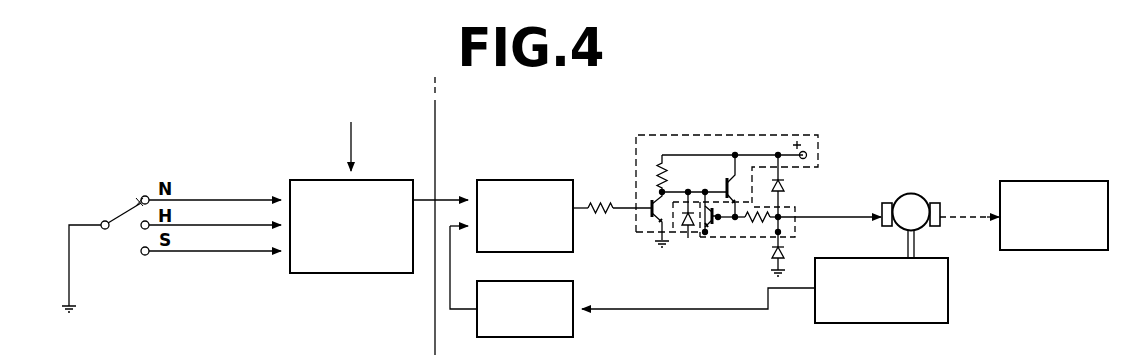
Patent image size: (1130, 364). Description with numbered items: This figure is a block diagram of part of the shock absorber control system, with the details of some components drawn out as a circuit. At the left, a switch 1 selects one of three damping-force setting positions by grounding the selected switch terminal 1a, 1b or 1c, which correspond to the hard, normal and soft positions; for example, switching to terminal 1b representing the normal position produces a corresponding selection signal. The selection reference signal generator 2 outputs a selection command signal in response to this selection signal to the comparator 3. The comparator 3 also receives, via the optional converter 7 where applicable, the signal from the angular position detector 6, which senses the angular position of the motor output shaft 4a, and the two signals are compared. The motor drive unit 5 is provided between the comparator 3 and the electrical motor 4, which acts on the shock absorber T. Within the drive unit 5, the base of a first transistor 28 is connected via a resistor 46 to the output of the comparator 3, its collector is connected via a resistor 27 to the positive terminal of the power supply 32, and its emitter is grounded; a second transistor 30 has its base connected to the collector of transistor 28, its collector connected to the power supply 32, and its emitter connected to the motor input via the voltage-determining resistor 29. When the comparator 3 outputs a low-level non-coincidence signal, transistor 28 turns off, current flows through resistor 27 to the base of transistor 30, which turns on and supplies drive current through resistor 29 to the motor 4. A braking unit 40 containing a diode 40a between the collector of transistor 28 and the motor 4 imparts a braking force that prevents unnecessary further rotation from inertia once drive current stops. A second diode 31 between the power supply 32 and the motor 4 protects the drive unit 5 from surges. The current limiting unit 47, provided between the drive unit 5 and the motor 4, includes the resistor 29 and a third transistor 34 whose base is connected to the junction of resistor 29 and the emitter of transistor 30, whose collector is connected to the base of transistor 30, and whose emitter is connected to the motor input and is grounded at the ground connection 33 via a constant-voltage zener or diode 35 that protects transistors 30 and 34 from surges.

The switch 1 is at (118, 215).
The switch terminal 1a is at (140, 228).
The switch terminal 1b is at (139, 197).
The switch terminal 1c is at (141, 254).
The selection reference signal generator 2 is at (403, 180).
The comparator 3 is at (490, 180).
The electrical motor 4 is at (921, 195).
The motor output shaft 4a is at (920, 245).
The motor drive unit 5 is at (716, 203).
The angular position detector 6 is at (948, 292).
The digital to analog converter 7 is at (483, 281).
The resistor 27 is at (659, 172).
The first transistor 28 is at (648, 214).
The voltage-determining resistor 29 is at (758, 223).
The second transistor 30 is at (727, 184).
The second diode 31 is at (787, 186).
The power supply 32 is at (807, 152).
The ground 33 is at (773, 273).
The third transistor 34 is at (712, 236).
The constant-voltage zener or diode 35 is at (787, 257).
The braking unit 40 is at (712, 249).
The diode 40a is at (686, 240).
The resistor 46 is at (603, 202).
The current limiting unit 47 is at (795, 214).
The shock absorber T is at (1093, 181).